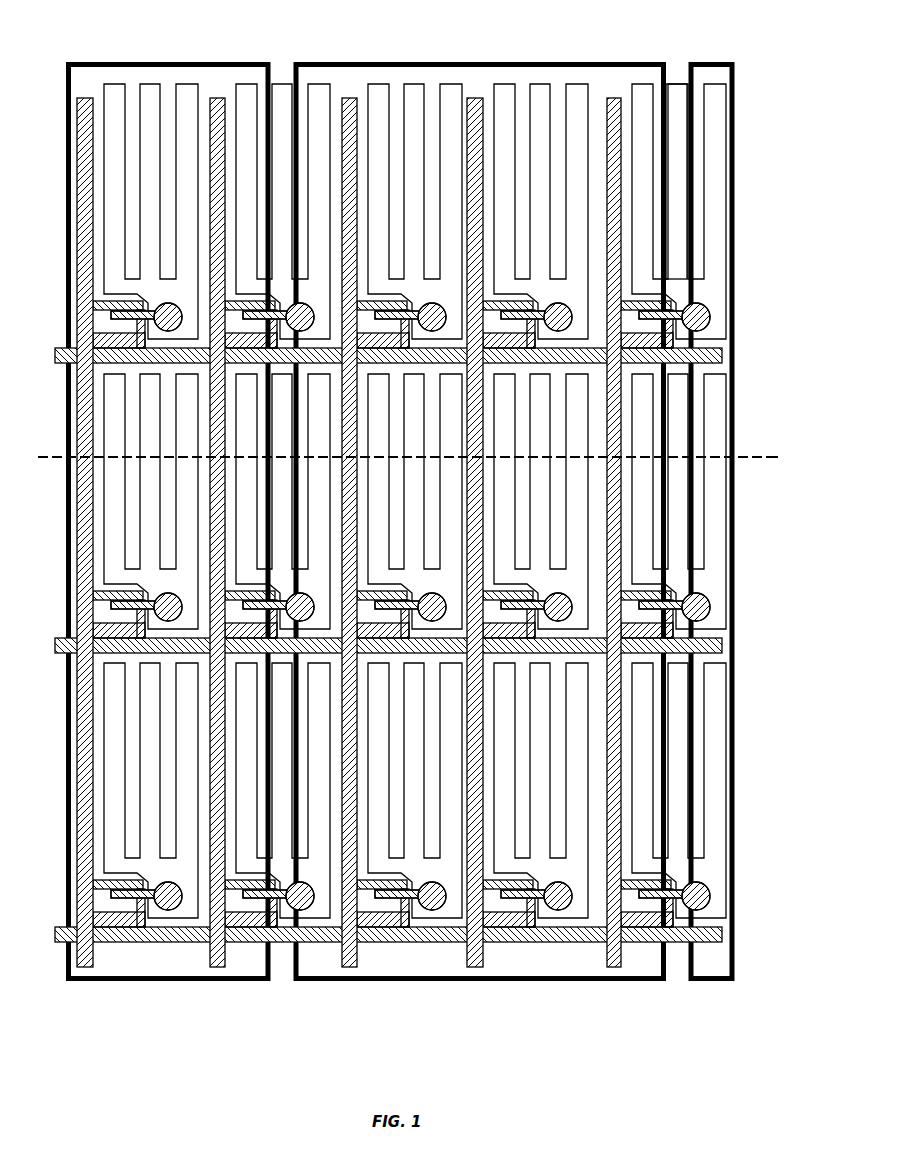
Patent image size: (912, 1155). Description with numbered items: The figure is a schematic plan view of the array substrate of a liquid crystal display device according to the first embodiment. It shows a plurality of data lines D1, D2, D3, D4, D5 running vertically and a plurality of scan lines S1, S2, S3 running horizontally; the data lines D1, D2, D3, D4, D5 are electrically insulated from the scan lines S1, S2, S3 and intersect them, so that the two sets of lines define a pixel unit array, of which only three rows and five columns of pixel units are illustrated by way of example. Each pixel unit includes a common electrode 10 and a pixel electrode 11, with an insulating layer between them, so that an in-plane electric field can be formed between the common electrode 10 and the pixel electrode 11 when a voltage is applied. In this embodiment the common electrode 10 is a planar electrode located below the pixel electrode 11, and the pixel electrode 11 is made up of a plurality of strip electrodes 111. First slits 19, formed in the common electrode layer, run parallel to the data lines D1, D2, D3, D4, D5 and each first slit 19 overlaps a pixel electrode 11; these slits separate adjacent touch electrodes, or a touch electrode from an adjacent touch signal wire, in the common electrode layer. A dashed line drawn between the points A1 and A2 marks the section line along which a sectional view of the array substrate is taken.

The common electrode 10 is at (733, 157).
The pixel electrode 11 is at (722, 122).
The strip electrode 111 is at (677, 108).
The first slit 19 is at (282, 68).
The data line D1 is at (83, 98).
The data line D2 is at (213, 98).
The data line D3 is at (345, 98).
The data line D4 is at (472, 98).
The data line D5 is at (610, 98).
The scan line S1 is at (57, 350).
The scan line S2 is at (57, 642).
The scan line S3 is at (57, 931).
The section line end point A1 is at (394, 458).
The section line end point A2 is at (790, 458).